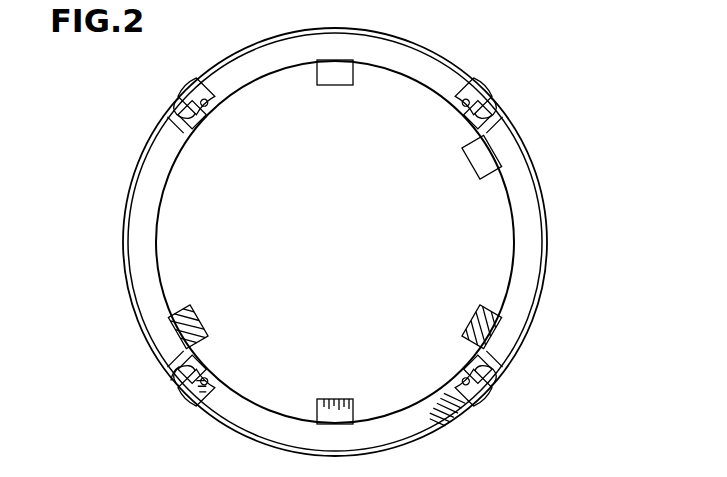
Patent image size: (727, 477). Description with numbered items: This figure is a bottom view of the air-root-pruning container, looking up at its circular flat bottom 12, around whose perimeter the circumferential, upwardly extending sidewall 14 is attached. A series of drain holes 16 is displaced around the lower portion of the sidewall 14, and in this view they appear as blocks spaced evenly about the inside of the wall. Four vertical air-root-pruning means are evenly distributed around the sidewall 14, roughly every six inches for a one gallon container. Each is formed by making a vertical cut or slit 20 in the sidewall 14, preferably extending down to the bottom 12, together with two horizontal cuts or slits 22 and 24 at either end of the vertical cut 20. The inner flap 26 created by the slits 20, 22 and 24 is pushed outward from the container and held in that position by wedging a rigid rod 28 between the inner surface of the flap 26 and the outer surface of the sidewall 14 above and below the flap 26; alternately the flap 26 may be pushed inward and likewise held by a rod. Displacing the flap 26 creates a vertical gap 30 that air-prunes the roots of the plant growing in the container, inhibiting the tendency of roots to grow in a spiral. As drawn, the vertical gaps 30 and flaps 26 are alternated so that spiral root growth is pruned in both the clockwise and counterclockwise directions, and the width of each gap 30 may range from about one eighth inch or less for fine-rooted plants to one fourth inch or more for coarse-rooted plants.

The circular flat bottom 12 is at (283, 241).
The sidewall 14 is at (541, 182).
The drain holes 16 is at (328, 83).
The vertical cut or slit 20 is at (178, 123).
The horizontal cut or slit 22 is at (178, 101).
The horizontal cut or slit 24 is at (199, 122).
The inner flap 26 is at (197, 88).
The rigid rod 28 is at (210, 104).
The vertical gap 30 is at (180, 371).